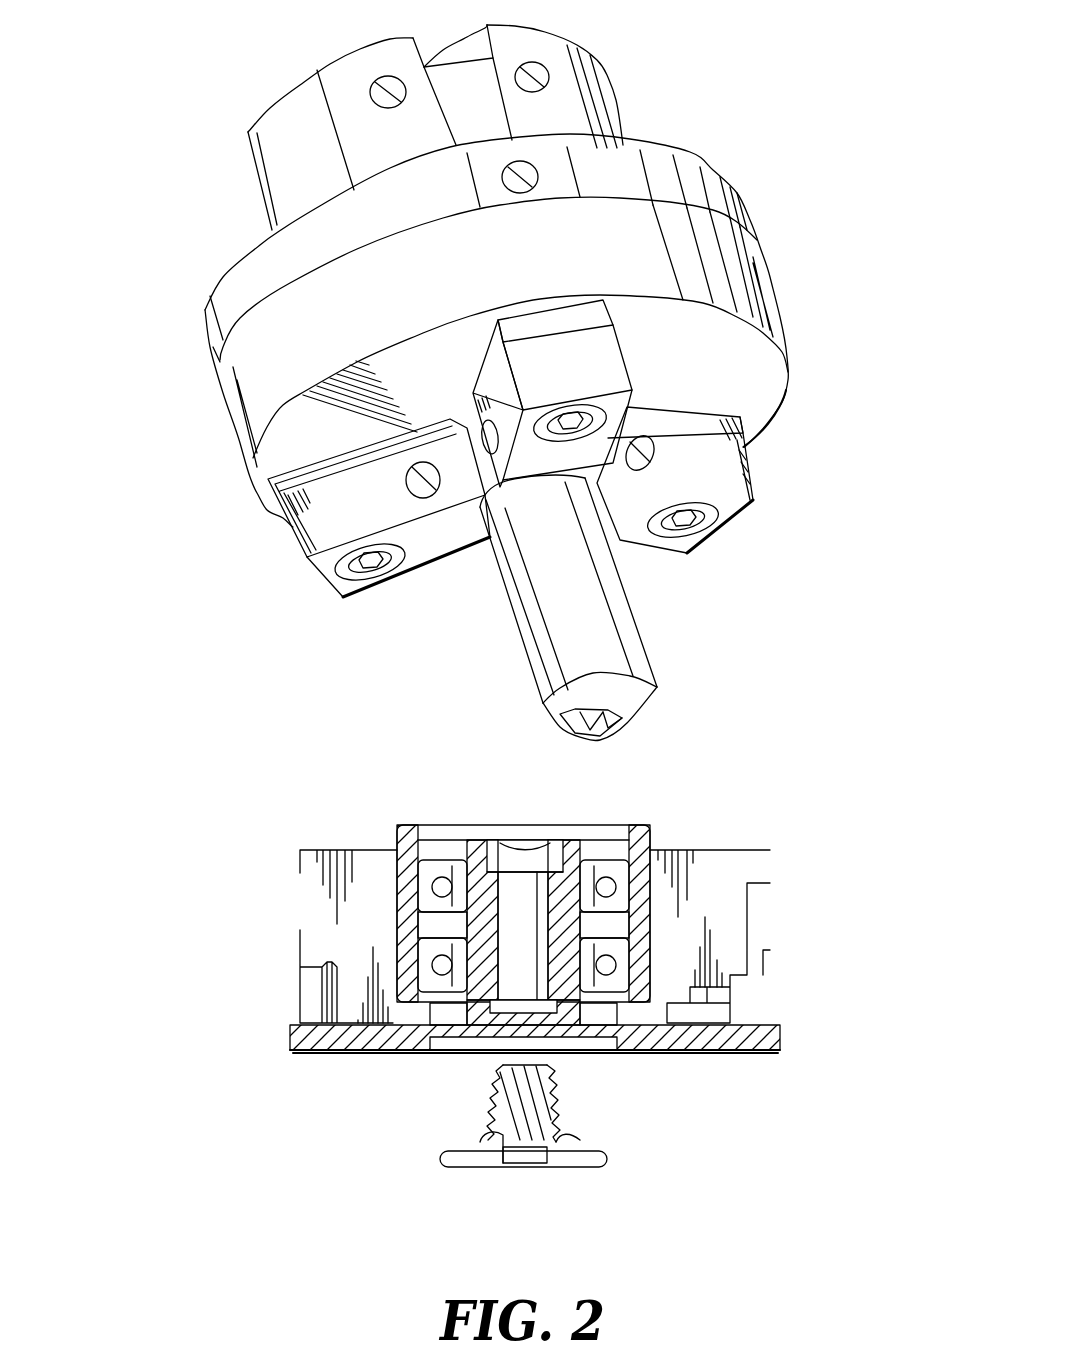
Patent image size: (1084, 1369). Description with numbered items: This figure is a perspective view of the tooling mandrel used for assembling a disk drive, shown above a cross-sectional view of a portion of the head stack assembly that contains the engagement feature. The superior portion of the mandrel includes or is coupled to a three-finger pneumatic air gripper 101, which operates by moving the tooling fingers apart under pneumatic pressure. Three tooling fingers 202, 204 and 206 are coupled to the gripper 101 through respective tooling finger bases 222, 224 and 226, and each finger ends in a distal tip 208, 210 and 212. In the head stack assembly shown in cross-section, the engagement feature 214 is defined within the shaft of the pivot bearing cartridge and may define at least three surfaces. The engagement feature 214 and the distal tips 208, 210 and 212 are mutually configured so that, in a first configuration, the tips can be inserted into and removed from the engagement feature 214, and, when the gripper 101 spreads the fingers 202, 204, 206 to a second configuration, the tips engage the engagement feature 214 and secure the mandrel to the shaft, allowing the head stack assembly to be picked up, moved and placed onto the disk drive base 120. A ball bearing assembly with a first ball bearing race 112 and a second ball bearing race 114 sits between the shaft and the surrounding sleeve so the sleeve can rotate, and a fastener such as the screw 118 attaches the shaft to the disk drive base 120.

The pneumatic air gripper 101 is at (682, 157).
The first ball bearing race 112 is at (623, 870).
The second ball bearing race 114 is at (427, 983).
The screw 118 is at (553, 1117).
The disk drive base 120 is at (720, 1043).
The tooling finger 202 is at (602, 633).
The tooling finger 204 is at (613, 630).
The tooling finger 206 is at (657, 693).
The distal tip 208 is at (600, 740).
The distal tip 210 is at (620, 737).
The distal tip 212 is at (627, 730).
The engagement feature 214 is at (545, 858).
The tooling finger base 222 is at (337, 590).
The tooling finger base 224 is at (612, 353).
The tooling finger base 226 is at (737, 520).